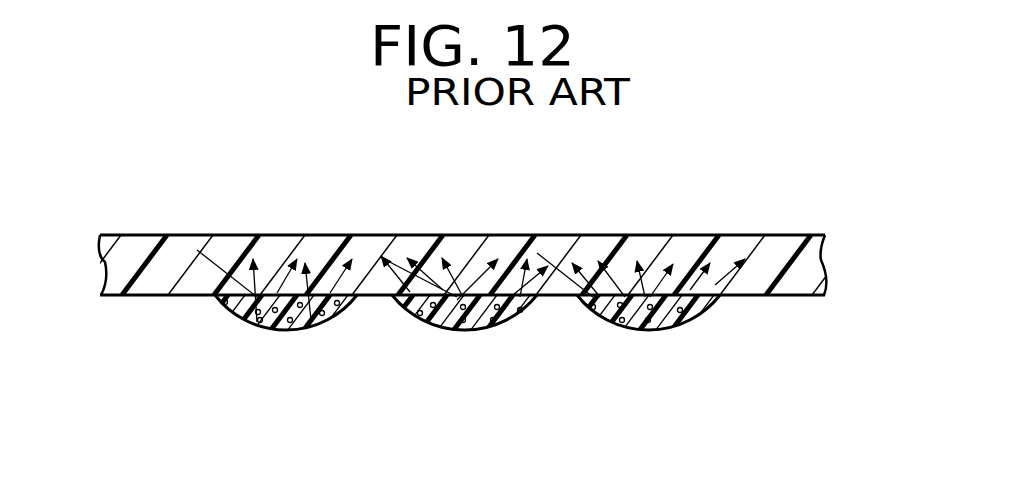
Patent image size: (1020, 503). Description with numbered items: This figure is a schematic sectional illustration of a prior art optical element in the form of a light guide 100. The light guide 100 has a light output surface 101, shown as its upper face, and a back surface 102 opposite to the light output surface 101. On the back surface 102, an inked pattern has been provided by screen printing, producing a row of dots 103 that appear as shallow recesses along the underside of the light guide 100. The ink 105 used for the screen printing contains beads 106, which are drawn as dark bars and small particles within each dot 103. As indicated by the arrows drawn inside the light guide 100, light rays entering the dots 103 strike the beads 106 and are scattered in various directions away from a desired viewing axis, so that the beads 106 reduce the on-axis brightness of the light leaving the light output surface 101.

The light guide 100 is at (556, 230).
The light output surface 101 is at (367, 234).
The back surface 102 is at (780, 298).
The dots 103 is at (324, 335).
The ink 105 is at (232, 312).
The beads 106 is at (255, 322).